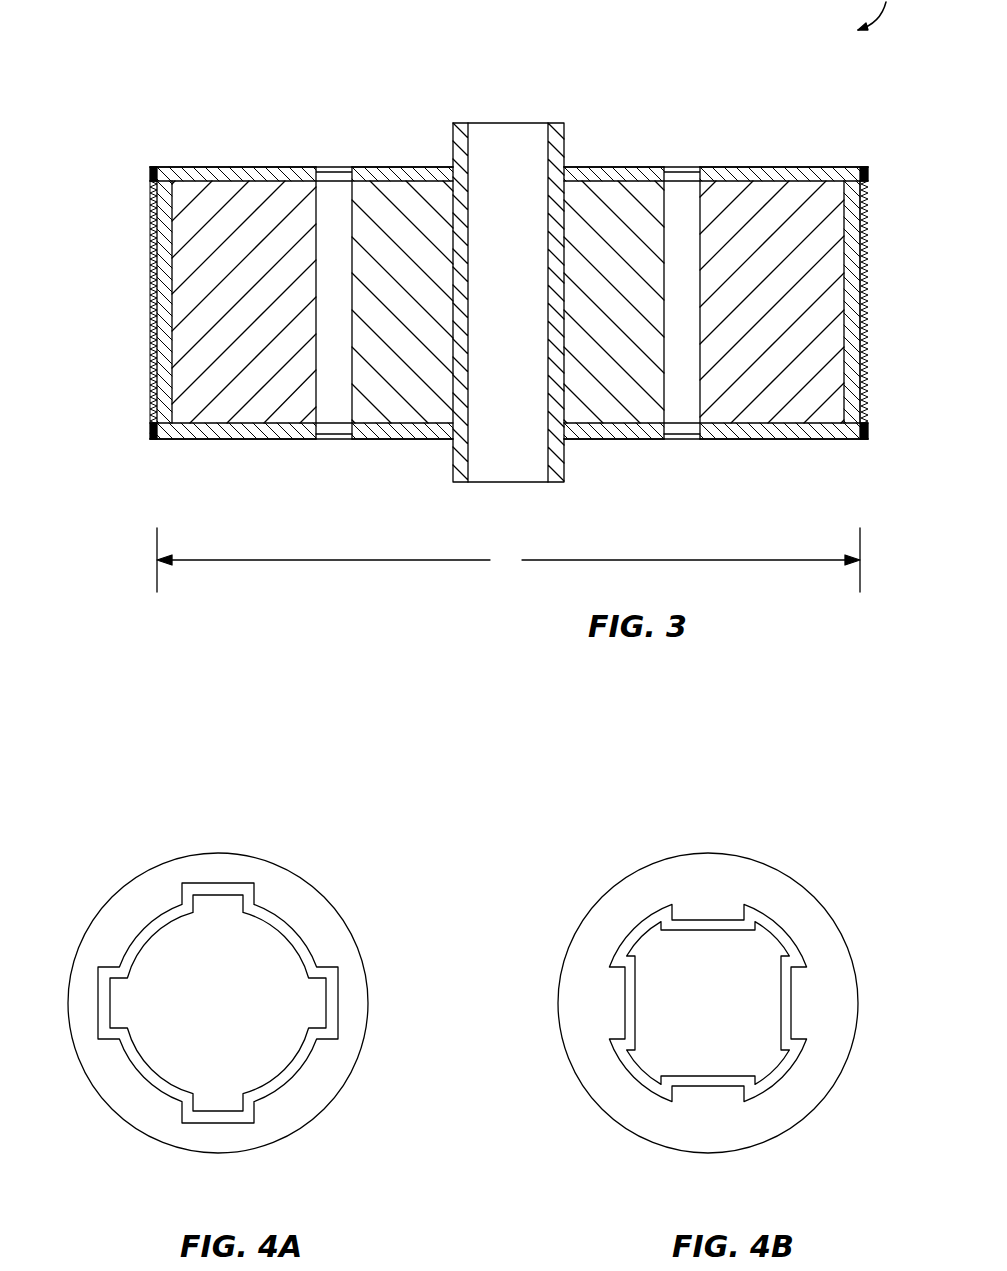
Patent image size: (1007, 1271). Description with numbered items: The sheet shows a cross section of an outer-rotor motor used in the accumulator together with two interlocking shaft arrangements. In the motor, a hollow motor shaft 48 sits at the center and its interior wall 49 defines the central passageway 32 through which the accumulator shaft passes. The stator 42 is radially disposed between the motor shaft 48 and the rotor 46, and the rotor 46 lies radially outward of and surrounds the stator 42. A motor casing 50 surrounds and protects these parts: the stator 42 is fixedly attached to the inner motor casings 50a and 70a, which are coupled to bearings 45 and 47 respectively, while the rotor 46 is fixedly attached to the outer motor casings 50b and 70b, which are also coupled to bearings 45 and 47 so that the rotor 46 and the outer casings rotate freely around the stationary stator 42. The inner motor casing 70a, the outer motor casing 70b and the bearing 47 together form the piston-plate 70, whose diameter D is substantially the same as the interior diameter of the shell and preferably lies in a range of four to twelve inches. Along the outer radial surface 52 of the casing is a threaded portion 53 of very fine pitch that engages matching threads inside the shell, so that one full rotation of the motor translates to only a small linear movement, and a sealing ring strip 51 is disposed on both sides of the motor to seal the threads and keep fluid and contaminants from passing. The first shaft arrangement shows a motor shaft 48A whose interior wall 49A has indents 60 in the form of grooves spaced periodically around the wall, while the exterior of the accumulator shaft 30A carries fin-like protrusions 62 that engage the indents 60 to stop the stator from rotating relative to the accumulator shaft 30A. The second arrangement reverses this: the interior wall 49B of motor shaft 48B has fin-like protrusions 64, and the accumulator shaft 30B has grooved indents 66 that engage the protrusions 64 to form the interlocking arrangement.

In FIG. 3, the central passageway 32 is at (518, 138).
In FIG. 3, the stator 42 is at (398, 410).
In FIG. 3, the bearing 45 is at (324, 167).
In FIG. 3, the rotor 46 is at (232, 410).
In FIG. 3, the bearing 47 is at (333, 440).
In FIG. 3, the motor shaft 48 is at (565, 143).
In FIG. 3, the interior wall 49 is at (470, 142).
In FIG. 3, the motor casing 50 is at (263, 152).
In FIG. 3, the inner motor casing 50a is at (389, 167).
In FIG. 3, the outer motor casing 50b is at (203, 165).
In FIG. 3, the sealing ring strip 51 is at (148, 173).
In FIG. 3, the outer radial surface 52 is at (153, 323).
In FIG. 3, the threaded portion 53 is at (150, 228).
In FIG. 3, the piston-plate 70 is at (262, 455).
In FIG. 3, the inner motor casing 70a is at (420, 440).
In FIG. 3, the outer motor casing 70b is at (188, 440).
In FIG. 3, the diameter D is at (508, 560).
In FIG. 4A, the accumulator shaft 30A is at (237, 1003).
In FIG. 4A, the motor shaft 48A is at (368, 1008).
In FIG. 4A, the interior wall 49A is at (310, 1077).
In FIG. 4A, the indents 60 is at (200, 883).
In FIG. 4A, the protrusions 62 is at (230, 907).
In FIG. 4B, the accumulator shaft 30B is at (714, 997).
In FIG. 4B, the motor shaft 48B is at (857, 972).
In FIG. 4B, the interior wall 49B is at (822, 1102).
In FIG. 4B, the protrusions 64 is at (702, 912).
In FIG. 4B, the indents 66 is at (720, 925).